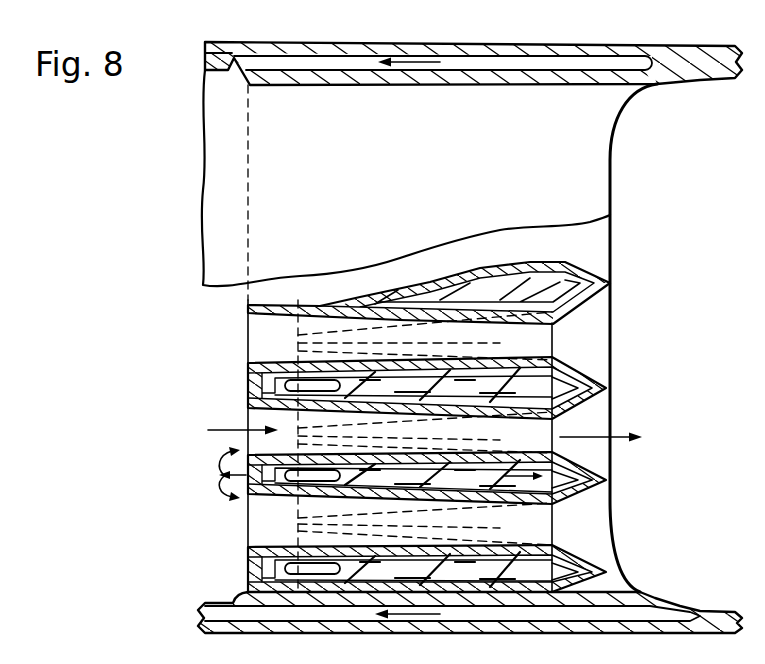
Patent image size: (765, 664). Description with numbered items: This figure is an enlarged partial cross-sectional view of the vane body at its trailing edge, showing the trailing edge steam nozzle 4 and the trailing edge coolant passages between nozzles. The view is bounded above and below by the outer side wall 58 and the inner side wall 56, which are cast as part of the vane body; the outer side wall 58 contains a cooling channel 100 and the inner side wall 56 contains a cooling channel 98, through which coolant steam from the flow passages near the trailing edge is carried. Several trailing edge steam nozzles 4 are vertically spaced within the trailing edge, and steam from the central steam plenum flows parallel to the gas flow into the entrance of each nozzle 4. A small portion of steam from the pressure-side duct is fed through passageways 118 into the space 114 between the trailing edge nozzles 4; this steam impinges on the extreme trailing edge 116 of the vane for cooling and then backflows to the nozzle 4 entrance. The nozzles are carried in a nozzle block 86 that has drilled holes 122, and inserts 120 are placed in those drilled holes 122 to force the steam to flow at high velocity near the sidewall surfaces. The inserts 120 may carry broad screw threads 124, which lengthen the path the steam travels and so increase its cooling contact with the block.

The trailing edge steam nozzle 4 is at (612, 327).
The inner side wall 56 is at (484, 633).
The outer side wall 58 is at (462, 44).
The nozzle block 86 is at (568, 513).
The cooling channel 98 is at (588, 617).
The cooling channel 100 is at (555, 64).
The space between trailing edge nozzles 114 is at (588, 483).
The extreme trailing edge 116 is at (612, 384).
The passageway 118 is at (298, 528).
The insert 120 is at (585, 474).
The drilled hole 122 is at (572, 497).
The broad screw thread 124 is at (538, 453).